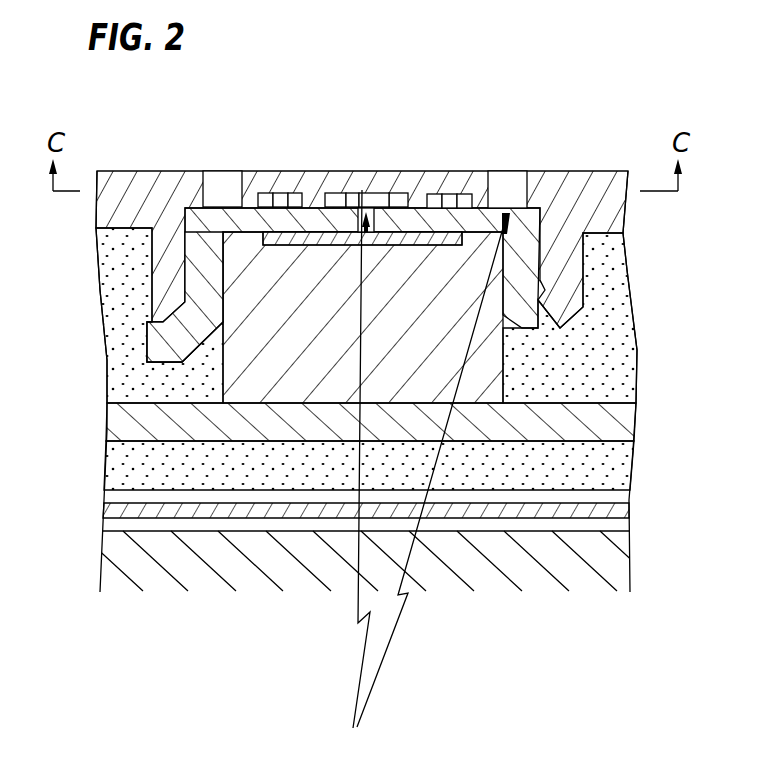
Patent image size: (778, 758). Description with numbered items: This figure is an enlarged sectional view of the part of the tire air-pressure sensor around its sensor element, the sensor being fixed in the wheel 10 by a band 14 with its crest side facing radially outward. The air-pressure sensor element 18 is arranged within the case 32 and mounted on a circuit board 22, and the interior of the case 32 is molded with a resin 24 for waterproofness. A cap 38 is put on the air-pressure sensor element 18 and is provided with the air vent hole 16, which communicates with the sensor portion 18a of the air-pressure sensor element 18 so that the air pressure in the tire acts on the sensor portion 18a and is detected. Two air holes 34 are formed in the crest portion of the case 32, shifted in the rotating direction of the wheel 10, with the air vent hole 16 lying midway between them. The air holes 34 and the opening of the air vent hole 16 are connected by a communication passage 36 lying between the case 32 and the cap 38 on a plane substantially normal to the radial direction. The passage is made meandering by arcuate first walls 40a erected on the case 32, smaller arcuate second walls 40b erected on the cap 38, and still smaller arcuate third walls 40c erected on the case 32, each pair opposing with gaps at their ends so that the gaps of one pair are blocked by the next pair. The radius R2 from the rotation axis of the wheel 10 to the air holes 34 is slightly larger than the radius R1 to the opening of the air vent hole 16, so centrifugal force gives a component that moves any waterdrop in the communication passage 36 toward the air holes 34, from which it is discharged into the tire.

The wheel 10 is at (558, 557).
The band 14 is at (620, 512).
The air vent hole 16 is at (355, 200).
The air-pressure sensor element 18 is at (312, 375).
The sensor portion 18a is at (305, 238).
The circuit board 22 is at (612, 428).
The resin 24 is at (600, 368).
The case 32 is at (592, 215).
The air holes 34 is at (215, 183).
The communication passage 36 is at (440, 195).
The cap 38 is at (528, 273).
The first walls 40a is at (252, 200).
The second walls 40b is at (450, 198).
The third walls 40c is at (415, 195).
The radius to the opening of the air vent hole R1 is at (352, 459).
The radius to the air holes R2 is at (430, 477).